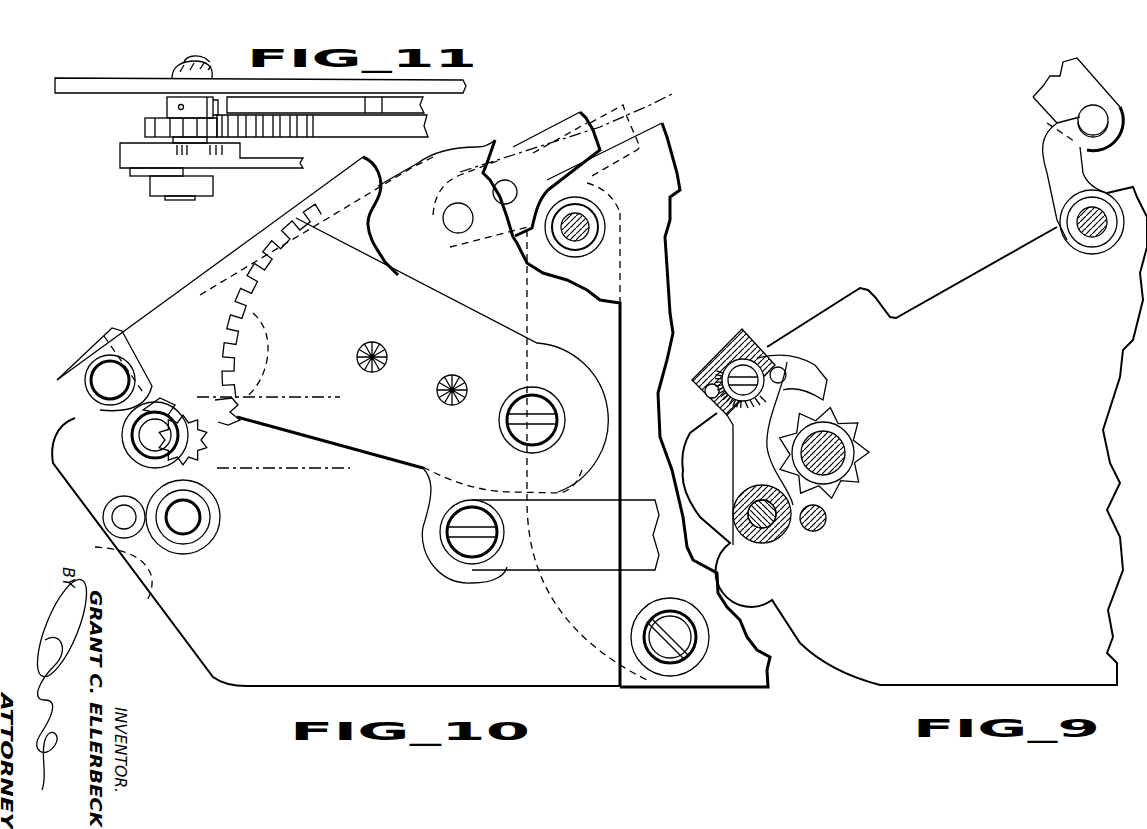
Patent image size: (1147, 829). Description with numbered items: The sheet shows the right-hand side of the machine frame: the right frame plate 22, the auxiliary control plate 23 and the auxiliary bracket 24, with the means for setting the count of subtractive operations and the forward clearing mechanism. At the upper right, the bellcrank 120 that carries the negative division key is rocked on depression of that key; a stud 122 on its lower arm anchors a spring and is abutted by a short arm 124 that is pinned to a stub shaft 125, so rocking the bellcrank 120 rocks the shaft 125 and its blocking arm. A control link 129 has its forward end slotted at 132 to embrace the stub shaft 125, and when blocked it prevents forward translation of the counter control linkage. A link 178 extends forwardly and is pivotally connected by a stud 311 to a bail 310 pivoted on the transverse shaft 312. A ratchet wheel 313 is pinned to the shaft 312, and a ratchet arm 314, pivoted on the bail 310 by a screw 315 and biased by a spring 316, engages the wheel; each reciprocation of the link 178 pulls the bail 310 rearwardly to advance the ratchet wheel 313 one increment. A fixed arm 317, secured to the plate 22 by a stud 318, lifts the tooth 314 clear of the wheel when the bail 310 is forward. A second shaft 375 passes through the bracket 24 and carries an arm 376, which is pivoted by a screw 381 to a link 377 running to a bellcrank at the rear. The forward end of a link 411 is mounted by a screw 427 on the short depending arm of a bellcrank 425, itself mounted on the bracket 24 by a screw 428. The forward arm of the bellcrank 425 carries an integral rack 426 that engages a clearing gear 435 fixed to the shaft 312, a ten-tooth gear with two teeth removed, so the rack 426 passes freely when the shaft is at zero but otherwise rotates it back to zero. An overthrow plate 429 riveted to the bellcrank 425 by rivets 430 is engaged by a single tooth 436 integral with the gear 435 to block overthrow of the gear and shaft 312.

In FIG. 9, the right frame plate 22 is at (924, 668).
In FIG. 10, the auxiliary control plate 23 is at (752, 672).
In FIG. 11, the auxiliary bracket 24 is at (466, 86).
In FIG. 10, the auxiliary bracket 24 is at (458, 672).
In FIG. 9, the bellcrank 120 is at (1052, 103).
In FIG. 9, the stud 122 is at (1093, 120).
In FIG. 9, the arm 124 is at (1060, 185).
In FIG. 10, the stub shaft 125 is at (455, 230).
In FIG. 9, the stub shaft 125 is at (1083, 230).
In FIG. 10, the control link 129 is at (553, 123).
In FIG. 10, the slot 132 is at (490, 150).
In FIG. 10, the link 178 is at (160, 320).
In FIG. 10, the bail 310 is at (108, 340).
In FIG. 9, the bail 310 is at (727, 352).
In FIG. 10, the stud 311 is at (100, 385).
In FIG. 11, the transverse shaft 312 is at (178, 75).
In FIG. 10, the transverse shaft 312 is at (207, 448).
In FIG. 9, the transverse shaft 312 is at (833, 447).
In FIG. 9, the ratchet wheel 313 is at (842, 413).
In FIG. 9, the ratchet arm 314 is at (810, 380).
In FIG. 9, the screw 315 is at (755, 371).
In FIG. 9, the spring 316 is at (727, 415).
In FIG. 9, the fixed arm 317 is at (743, 472).
In FIG. 9, the stud 318 is at (758, 527).
In FIG. 11, the shaft 375 is at (188, 63).
In FIG. 10, the shaft 375 is at (186, 520).
In FIG. 9, the shaft 375 is at (826, 518).
In FIG. 11, the arm 376 is at (130, 152).
In FIG. 10, the arm 376 is at (220, 500).
In FIG. 10, the link 377 is at (123, 440).
In FIG. 10, the screw 381 is at (150, 417).
In FIG. 10, the link 411 is at (568, 572).
In FIG. 11, the bellcrank 425 is at (322, 126).
In FIG. 10, the bellcrank 425 is at (400, 452).
In FIG. 10, the rack 426 is at (267, 285).
In FIG. 10, the screw 427 is at (465, 545).
In FIG. 10, the screw 428 is at (535, 400).
In FIG. 11, the plate 429 is at (425, 106).
In FIG. 10, the plate 429 is at (360, 233).
In FIG. 10, the rivets 430 is at (385, 350).
In FIG. 11, the clearing gear 435 is at (150, 126).
In FIG. 10, the clearing gear 435 is at (240, 413).
In FIG. 11, the single tooth 436 is at (200, 104).